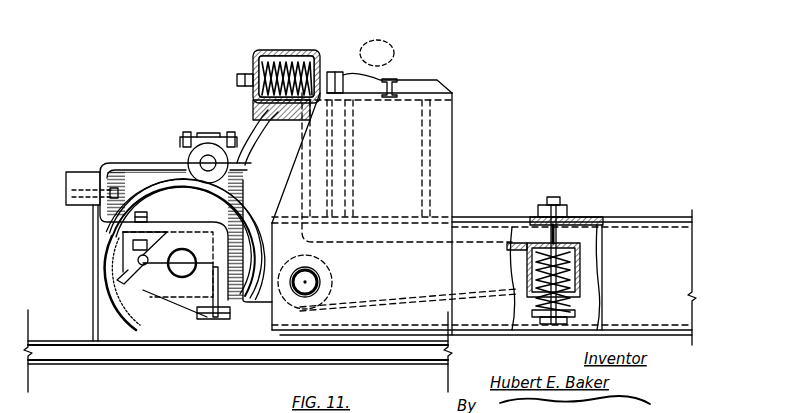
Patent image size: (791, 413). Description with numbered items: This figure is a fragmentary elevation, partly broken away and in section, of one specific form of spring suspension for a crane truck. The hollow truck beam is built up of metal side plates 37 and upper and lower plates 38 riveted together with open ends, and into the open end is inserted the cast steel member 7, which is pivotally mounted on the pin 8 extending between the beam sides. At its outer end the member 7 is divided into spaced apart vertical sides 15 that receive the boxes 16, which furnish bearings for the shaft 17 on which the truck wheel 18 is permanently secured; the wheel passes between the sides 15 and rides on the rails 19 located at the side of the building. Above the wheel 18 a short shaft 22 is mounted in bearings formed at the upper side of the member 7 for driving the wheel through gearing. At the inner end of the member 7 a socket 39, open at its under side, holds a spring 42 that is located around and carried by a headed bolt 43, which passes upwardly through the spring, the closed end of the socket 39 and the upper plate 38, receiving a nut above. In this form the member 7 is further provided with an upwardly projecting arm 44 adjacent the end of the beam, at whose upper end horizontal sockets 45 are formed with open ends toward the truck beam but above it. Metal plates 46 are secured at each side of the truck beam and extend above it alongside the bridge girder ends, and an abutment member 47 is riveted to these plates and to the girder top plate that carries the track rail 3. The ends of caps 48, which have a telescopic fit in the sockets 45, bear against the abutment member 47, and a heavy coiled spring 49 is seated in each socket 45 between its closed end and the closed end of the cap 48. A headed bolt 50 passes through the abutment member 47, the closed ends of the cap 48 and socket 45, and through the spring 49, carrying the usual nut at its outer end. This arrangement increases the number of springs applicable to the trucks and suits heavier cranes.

The track rail 3 is at (393, 78).
The member 7 is at (515, 247).
The pin 8 is at (307, 282).
The vertical sides 15 is at (169, 252).
The boxes 16 is at (140, 277).
The shaft 17 is at (180, 265).
The truck wheel 18 is at (155, 317).
The rails 19 is at (243, 351).
The short shaft 22 is at (208, 166).
The side plates 37 is at (677, 262).
The upper and lower plates 38 is at (553, 333).
The socket 39 is at (582, 268).
The spring 42 is at (577, 303).
The headed bolt 43 is at (560, 232).
The upwardly projecting arm 44 is at (263, 127).
The sockets 45 is at (287, 56).
The metal plates 46 is at (445, 152).
The abutment member 47 is at (377, 53).
The caps 48 is at (322, 67).
The coiled spring 49 is at (276, 58).
The headed bolt 50 is at (281, 133).